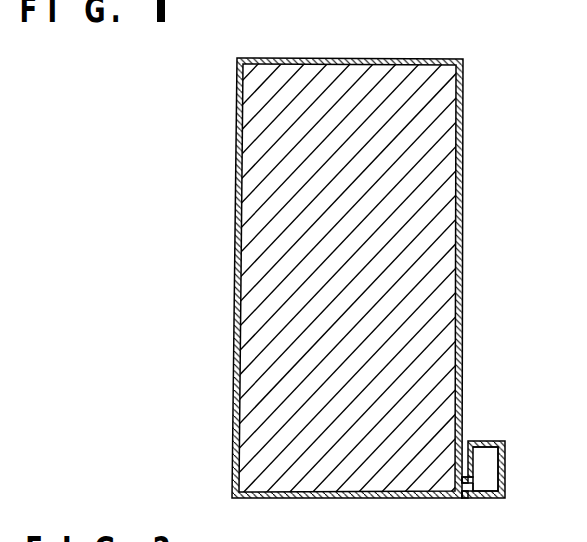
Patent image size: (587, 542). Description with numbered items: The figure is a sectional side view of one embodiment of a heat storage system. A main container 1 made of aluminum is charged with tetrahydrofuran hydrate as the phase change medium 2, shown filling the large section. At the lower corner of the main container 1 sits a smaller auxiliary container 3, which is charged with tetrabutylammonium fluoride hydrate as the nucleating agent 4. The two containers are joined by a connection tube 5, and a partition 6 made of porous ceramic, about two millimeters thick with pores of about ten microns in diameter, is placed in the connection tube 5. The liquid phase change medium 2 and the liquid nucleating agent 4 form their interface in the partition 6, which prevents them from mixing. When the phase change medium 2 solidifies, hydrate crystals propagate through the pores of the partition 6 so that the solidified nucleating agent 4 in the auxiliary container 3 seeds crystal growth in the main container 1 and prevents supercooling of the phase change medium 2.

The main container 1 is at (463, 218).
The phase change medium 2 is at (417, 247).
The auxiliary container 3 is at (505, 468).
The nucleating agent 4 is at (484, 457).
The connection tube 5 is at (464, 492).
The partition 6 is at (456, 489).